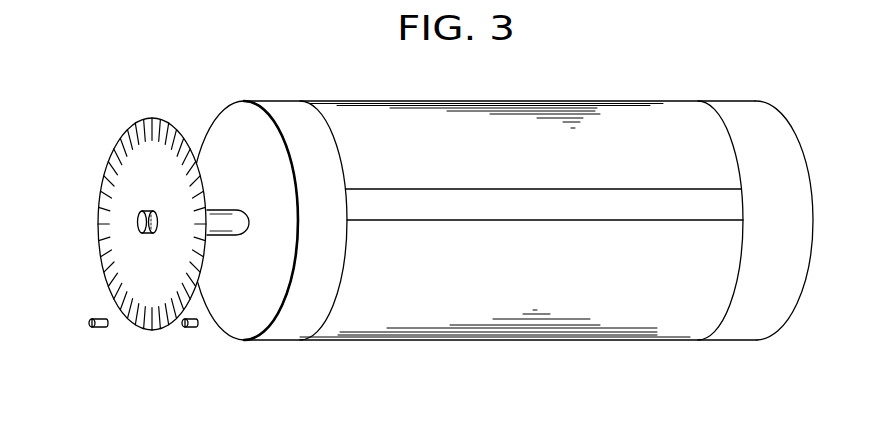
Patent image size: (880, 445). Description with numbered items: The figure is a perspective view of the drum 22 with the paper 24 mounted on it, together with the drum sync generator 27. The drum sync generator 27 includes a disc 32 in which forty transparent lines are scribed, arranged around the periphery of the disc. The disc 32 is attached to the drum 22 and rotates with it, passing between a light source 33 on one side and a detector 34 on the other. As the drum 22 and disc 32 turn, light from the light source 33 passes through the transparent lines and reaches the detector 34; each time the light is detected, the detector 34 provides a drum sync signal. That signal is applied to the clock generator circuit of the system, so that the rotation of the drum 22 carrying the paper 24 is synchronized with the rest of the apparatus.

The drum 22 is at (770, 327).
The paper 24 is at (675, 110).
The drum sync generator 27 is at (69, 226).
The disc 32 is at (158, 120).
The light source 33 is at (95, 328).
The detector 34 is at (184, 330).